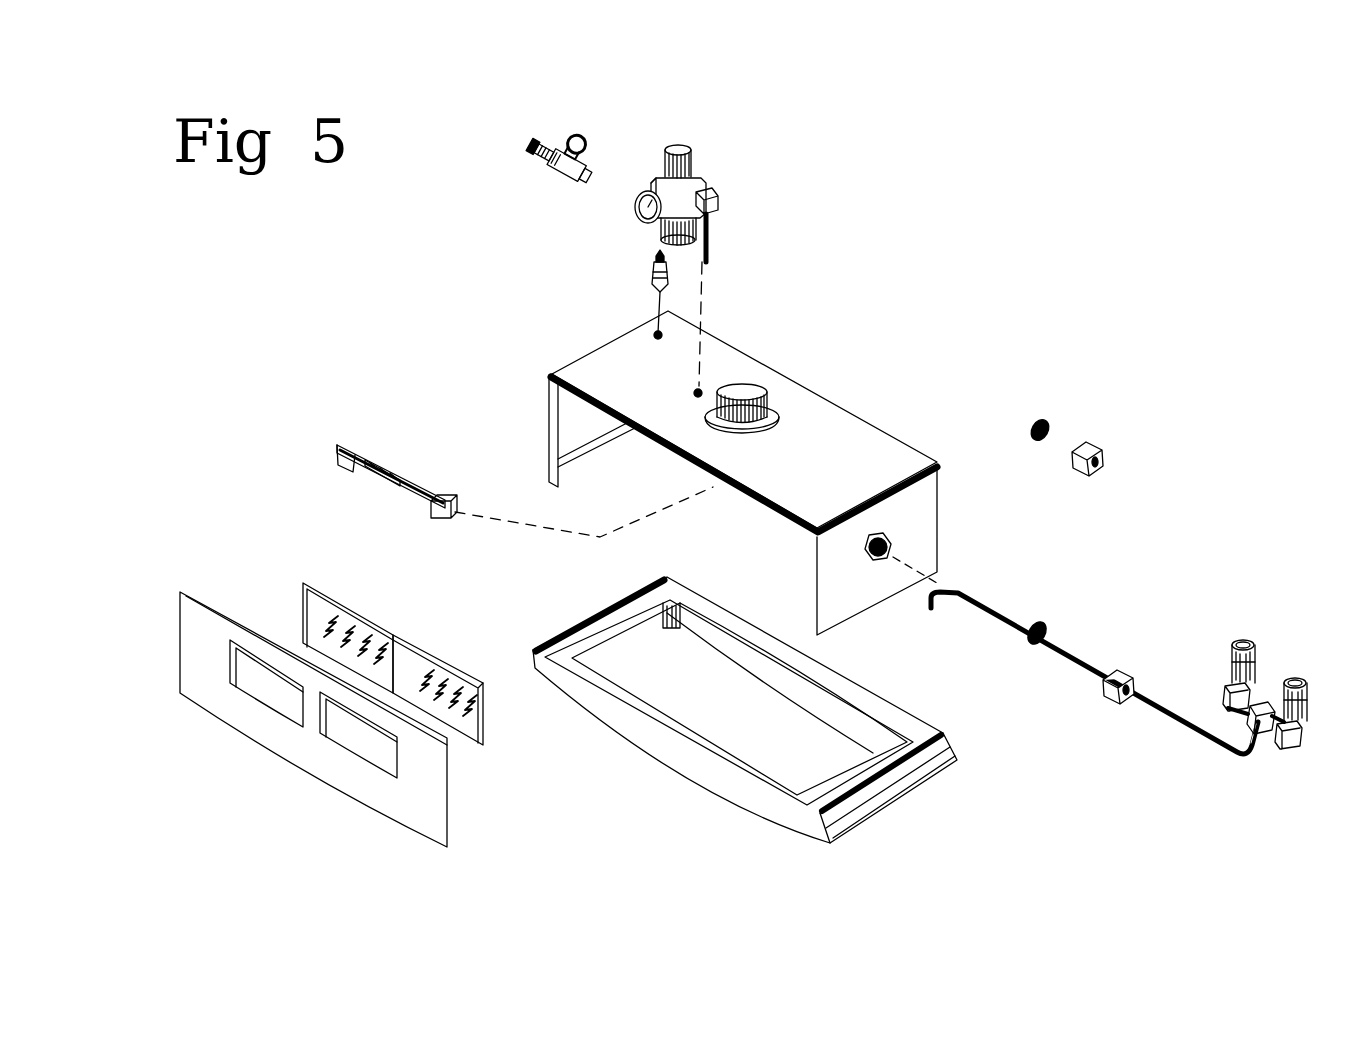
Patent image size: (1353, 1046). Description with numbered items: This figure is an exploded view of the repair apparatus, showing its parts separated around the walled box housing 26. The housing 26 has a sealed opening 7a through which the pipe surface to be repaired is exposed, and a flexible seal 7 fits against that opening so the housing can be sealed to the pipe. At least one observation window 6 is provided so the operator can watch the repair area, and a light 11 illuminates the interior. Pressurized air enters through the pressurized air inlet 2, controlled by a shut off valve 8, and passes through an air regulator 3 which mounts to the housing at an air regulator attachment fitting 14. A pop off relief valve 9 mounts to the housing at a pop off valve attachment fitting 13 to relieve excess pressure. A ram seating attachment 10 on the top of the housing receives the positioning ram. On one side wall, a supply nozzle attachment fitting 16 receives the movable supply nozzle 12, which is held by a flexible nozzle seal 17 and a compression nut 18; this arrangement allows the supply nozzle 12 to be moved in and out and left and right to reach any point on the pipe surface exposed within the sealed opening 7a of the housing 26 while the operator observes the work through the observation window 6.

The pressurized air inlet 2 is at (530, 147).
The air regulator 3 is at (633, 207).
The observation window 6 is at (420, 637).
The flexible seal 7 is at (653, 753).
The sealed opening 7a is at (738, 728).
The shut off valve 8 is at (553, 170).
The pop off relief valve 9 is at (644, 275).
The ram seating attachment 10 is at (745, 385).
The light 11 is at (408, 462).
The movable supply nozzle 12 is at (1175, 737).
The pop off valve attachment fitting 13 is at (651, 335).
The air regulator attachment fitting 14 is at (690, 393).
The supply nozzle attachment fitting 16 is at (886, 560).
The flexible nozzle seal 17 is at (1025, 613).
The compression nut 18 is at (1078, 482).
The walled box housing 26 is at (868, 462).